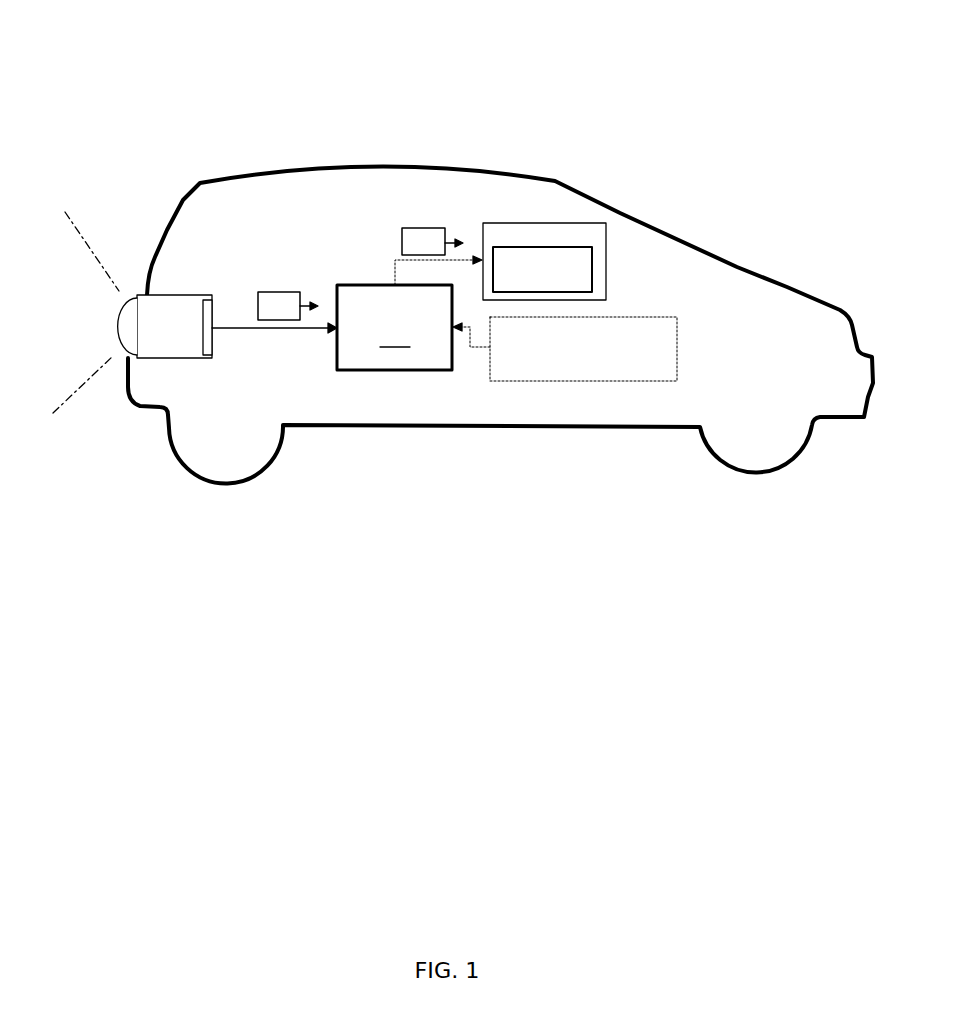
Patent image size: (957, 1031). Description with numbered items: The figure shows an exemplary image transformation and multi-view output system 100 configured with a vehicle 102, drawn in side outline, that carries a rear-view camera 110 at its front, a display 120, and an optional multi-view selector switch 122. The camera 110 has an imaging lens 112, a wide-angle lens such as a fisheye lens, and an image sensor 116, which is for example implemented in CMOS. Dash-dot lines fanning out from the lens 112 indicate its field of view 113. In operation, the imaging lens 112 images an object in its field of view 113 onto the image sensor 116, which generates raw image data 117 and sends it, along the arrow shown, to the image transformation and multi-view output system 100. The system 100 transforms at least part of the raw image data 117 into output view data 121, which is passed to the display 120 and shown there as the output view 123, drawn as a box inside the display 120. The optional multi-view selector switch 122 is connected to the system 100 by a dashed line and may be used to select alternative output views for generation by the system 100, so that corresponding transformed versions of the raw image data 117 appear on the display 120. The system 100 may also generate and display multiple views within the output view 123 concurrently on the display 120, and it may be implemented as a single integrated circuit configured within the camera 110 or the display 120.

The image transformation and multi-view output system 100 is at (252, 61).
The vehicle 102 is at (790, 284).
The rear-view camera 110 is at (148, 370).
The imaging lens 112 is at (122, 300).
The field of view 113 is at (52, 342).
The image sensor 116 is at (206, 297).
The raw image data 117 is at (292, 315).
The display 120 is at (598, 245).
The output view data 121 is at (436, 252).
The multi-view selector switch 122 is at (570, 379).
The output view 123 is at (578, 290).